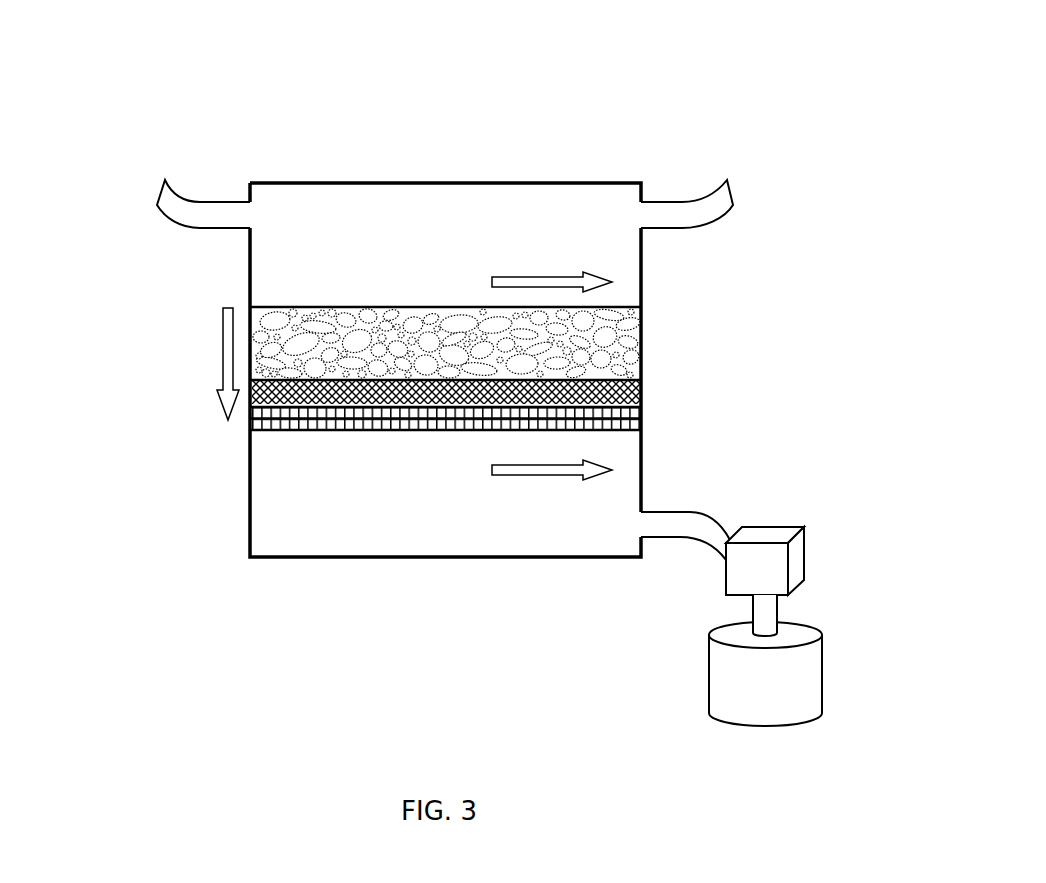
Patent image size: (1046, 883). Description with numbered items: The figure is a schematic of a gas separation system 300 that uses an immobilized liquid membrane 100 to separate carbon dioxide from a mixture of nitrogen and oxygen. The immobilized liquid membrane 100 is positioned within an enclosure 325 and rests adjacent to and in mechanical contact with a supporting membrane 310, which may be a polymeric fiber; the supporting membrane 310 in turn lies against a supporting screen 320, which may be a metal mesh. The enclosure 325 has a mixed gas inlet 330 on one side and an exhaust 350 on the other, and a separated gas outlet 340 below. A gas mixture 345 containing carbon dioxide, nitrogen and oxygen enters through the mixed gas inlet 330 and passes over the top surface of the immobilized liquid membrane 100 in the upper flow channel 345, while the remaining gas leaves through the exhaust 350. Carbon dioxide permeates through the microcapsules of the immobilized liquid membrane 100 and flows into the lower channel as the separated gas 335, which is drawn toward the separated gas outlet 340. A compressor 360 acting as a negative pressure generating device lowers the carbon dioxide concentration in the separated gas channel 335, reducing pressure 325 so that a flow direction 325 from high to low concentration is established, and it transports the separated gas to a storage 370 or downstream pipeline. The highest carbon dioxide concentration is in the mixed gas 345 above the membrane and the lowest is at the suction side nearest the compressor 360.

The gas separation system 300 is at (345, 70).
The enclosure 325 is at (475, 182).
The mixed gas inlet 330 is at (198, 202).
The exhaust 350 is at (683, 202).
The mixed gas flow channel 345 is at (543, 270).
The immobilized liquid membrane 100 is at (610, 325).
The supporting membrane 310 is at (623, 395).
The supporting screen 320 is at (625, 420).
The separated gas flow channel 335 is at (543, 490).
The separated gas outlet 340 is at (670, 510).
The compressor 360 is at (725, 577).
The storage 370 is at (710, 670).